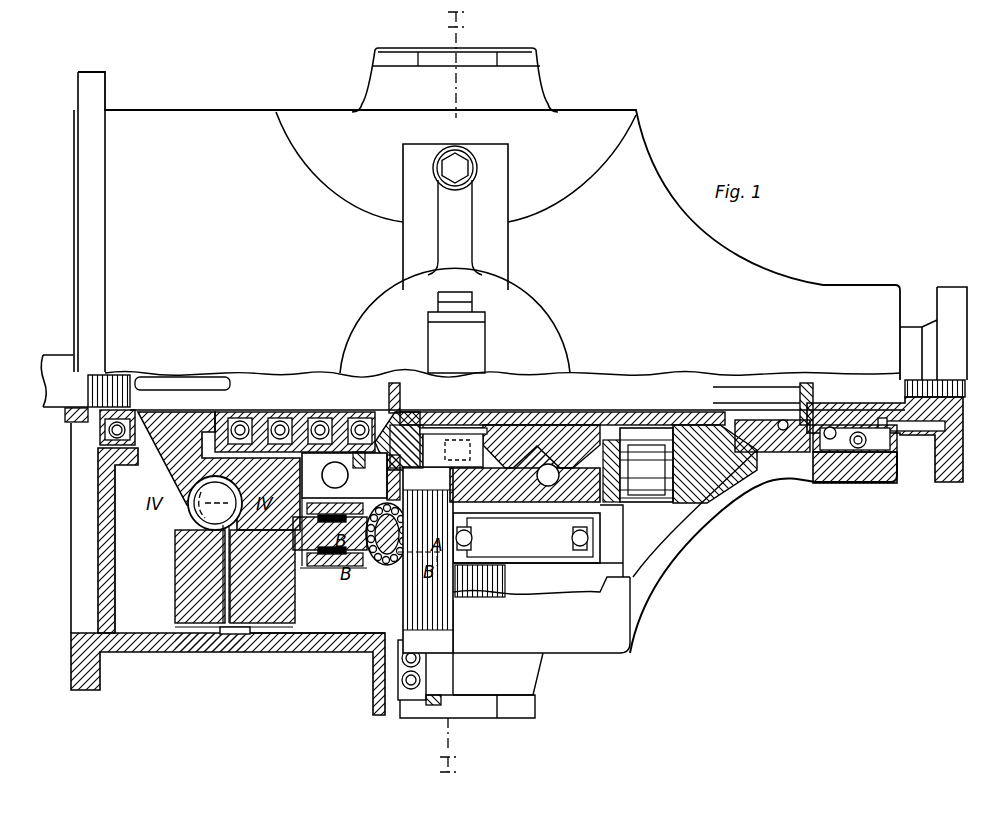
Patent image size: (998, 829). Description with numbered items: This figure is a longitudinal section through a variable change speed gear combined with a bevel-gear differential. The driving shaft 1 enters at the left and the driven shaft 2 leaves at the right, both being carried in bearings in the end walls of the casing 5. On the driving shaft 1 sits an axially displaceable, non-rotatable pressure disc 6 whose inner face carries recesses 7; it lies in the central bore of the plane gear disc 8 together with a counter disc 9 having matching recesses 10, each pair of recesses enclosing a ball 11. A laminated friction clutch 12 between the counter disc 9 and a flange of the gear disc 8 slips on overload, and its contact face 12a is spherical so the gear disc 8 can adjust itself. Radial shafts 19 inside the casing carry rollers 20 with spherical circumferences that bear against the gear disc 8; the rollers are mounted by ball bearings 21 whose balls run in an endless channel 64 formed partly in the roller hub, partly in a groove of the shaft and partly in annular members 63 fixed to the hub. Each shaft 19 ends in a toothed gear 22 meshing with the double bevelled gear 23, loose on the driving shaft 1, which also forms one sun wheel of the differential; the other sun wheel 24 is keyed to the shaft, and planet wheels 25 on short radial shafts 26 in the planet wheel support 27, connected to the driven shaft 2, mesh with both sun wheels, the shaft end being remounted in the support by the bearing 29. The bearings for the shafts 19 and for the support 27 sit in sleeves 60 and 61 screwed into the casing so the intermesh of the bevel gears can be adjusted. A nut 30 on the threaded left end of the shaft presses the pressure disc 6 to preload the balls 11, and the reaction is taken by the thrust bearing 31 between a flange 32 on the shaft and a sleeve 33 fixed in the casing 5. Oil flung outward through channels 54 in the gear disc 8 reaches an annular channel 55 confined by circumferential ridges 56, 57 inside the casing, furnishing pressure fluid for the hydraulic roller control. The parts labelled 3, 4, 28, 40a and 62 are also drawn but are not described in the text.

The driving shaft 1 is at (68, 418).
The driven shaft 2 is at (937, 450).
The bearing 3 is at (100, 470).
The ball bearing 4 is at (855, 485).
The casing 5 is at (138, 654).
The pressure disc 6 is at (180, 410).
The recesses 7 is at (188, 490).
The gear disc 8 is at (172, 590).
The counter disc 9 is at (262, 410).
The recesses 10 is at (333, 467).
The ball 11 is at (179, 522).
The laminated friction clutch 12 is at (334, 486).
The spherical contact face 12a is at (330, 568).
The radial shafts 19 is at (346, 645).
The roller 20 is at (533, 572).
The ball bearings 21 is at (405, 575).
The toothed gear 22 is at (480, 418).
The double bevelled gear 23 is at (590, 430).
The sun wheel 24 is at (737, 388).
The planet wheels 25 is at (740, 502).
The radial shafts 26 is at (683, 547).
The planet wheel support 27 is at (815, 483).
The roller bearing 28 is at (650, 430).
The bearing 29 is at (757, 492).
The nut 30 is at (100, 445).
The thrust bearing 31 is at (318, 410).
The flange 32 is at (393, 383).
The sleeve 33 is at (360, 464).
The sleeve 40a is at (345, 570).
The channels 54 is at (335, 582).
The annular channel 55 is at (238, 635).
The circumferential ridge 56 is at (273, 640).
The circumferential ridge 57 is at (194, 655).
The sleeve 60 is at (382, 698).
The sleeve 61 is at (892, 483).
The spline 62 is at (410, 607).
The annular member 63 is at (374, 515).
The endless channel 64 is at (367, 565).